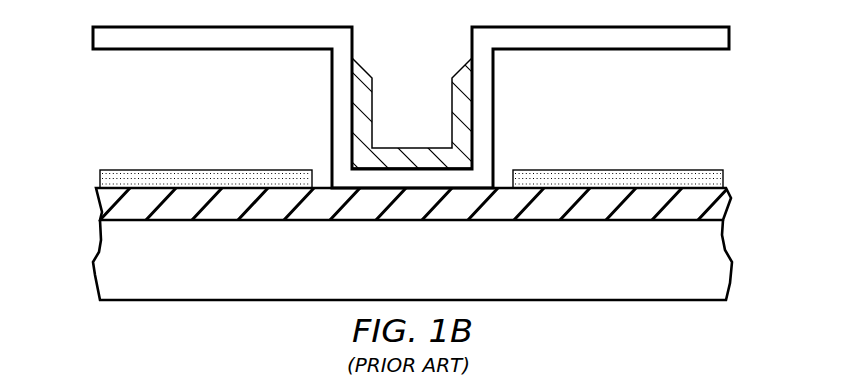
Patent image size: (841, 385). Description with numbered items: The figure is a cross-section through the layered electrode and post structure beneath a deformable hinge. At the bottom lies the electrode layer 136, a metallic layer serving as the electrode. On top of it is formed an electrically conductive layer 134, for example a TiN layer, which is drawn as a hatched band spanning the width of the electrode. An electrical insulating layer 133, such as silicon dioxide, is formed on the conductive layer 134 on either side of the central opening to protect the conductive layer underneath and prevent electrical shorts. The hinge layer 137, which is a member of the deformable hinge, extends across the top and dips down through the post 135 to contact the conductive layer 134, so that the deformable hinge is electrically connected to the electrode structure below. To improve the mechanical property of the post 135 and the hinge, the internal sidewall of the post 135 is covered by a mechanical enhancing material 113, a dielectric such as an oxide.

The mechanical enhancing material 113 is at (360, 78).
The electrical insulating layer 133 is at (210, 178).
The electrically conductive layer 134 is at (729, 205).
The post 135 is at (430, 118).
The electrode layer 136 is at (431, 272).
The hinge layer 137 is at (93, 42).